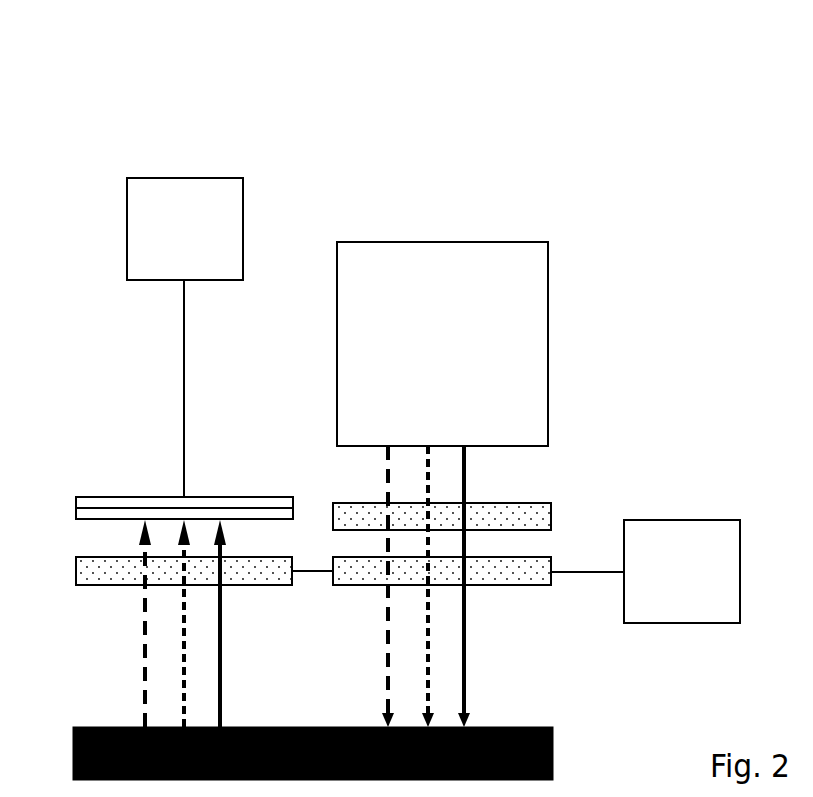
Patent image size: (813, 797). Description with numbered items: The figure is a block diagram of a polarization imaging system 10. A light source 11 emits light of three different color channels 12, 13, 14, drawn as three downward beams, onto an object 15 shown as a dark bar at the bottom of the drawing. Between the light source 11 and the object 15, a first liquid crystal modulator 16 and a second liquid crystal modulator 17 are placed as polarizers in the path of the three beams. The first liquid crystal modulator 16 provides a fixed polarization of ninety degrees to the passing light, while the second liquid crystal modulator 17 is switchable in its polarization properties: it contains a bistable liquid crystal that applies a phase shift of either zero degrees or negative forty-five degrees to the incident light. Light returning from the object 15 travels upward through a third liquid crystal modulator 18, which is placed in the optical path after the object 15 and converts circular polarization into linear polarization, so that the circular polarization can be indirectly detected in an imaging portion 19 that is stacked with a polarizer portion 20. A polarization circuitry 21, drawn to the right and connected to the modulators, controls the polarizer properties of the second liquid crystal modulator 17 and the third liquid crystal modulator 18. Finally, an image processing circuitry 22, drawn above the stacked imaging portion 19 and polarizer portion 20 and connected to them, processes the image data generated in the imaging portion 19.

The polarization imaging system 10 is at (262, 66).
The light source 11 is at (478, 242).
The first color channel 12 is at (464, 688).
The second color channel 13 is at (428, 672).
The third color channel 14 is at (388, 609).
The object 15 is at (553, 767).
The first liquid crystal modulator 16 is at (541, 503).
The second liquid crystal modulator 17 is at (520, 556).
The third liquid crystal modulator 18 is at (76, 573).
The imaging portion 19 is at (76, 512).
The polarizer portion 20 is at (148, 497).
The polarization circuitry 21 is at (677, 520).
The image processing circuitry 22 is at (203, 178).